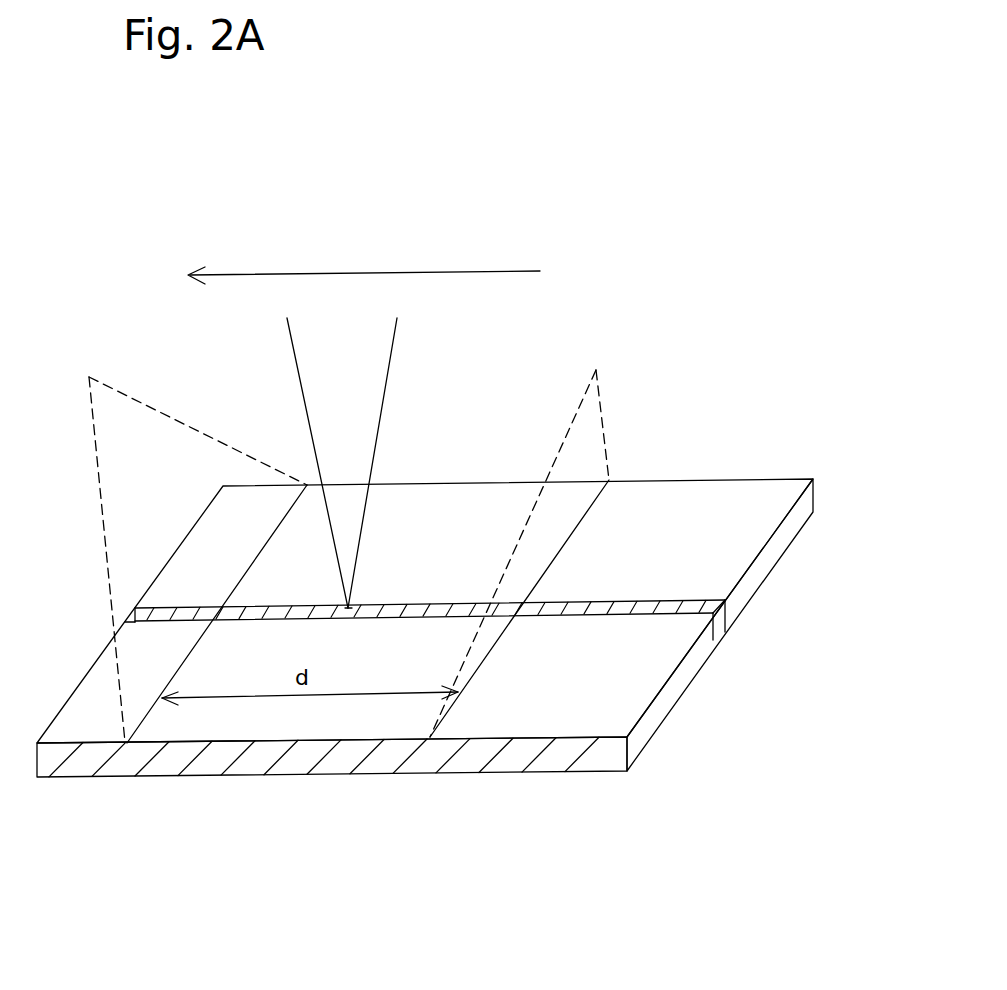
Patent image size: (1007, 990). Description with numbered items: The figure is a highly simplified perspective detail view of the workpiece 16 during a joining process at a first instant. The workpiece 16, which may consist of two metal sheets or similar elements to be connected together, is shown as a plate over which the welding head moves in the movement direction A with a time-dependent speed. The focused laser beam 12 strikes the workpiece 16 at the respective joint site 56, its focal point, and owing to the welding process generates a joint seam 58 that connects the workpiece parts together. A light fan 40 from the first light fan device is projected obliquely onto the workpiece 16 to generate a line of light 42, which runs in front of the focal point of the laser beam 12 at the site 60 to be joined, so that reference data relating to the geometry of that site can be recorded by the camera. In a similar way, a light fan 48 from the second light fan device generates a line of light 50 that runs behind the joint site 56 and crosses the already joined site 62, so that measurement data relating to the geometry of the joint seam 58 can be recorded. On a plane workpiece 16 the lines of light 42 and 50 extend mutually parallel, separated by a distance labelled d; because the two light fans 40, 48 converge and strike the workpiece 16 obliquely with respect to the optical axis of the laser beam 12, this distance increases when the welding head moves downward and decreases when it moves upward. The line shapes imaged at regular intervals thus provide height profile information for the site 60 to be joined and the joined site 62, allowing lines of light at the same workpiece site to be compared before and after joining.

The laser beam 12 is at (397, 350).
The workpiece 16 is at (643, 723).
The light fan 40 is at (177, 418).
The line of light 42 is at (148, 710).
The light fan 48 is at (600, 402).
The line of light 50 is at (475, 668).
The joint site 56 is at (362, 603).
The joint seam 58 is at (603, 607).
The site to be joined 60 is at (227, 617).
The joined site 62 is at (510, 605).
The movement direction A is at (447, 272).